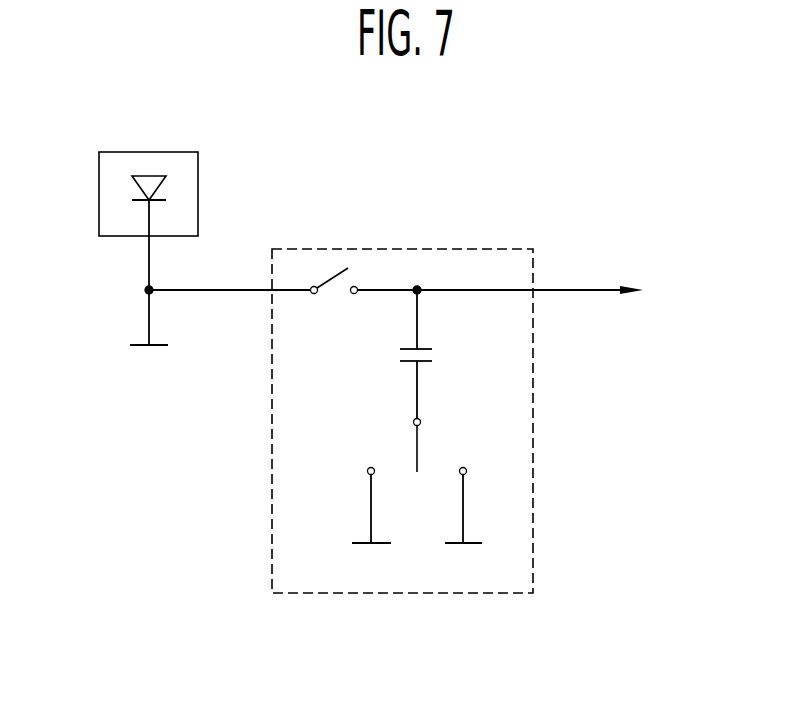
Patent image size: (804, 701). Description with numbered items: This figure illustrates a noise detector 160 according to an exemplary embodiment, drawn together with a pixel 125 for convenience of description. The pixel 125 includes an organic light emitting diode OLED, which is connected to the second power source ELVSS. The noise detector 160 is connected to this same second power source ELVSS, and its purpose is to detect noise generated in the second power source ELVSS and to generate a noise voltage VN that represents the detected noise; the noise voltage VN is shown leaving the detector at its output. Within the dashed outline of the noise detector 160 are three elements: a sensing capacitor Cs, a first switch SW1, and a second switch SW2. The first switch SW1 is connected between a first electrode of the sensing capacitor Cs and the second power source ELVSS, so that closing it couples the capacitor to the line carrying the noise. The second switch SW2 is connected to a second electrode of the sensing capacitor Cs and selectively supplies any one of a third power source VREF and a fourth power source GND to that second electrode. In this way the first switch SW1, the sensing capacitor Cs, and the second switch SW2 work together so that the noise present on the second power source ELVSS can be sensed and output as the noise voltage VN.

The pixel 125 is at (125, 165).
The noise detector 160 is at (406, 391).
The organic light emitting diode OLED is at (133, 184).
The first switch SW1 is at (334, 296).
The second switch SW2 is at (417, 463).
The sensing capacitor Cs is at (430, 356).
The second power source ELVSS is at (148, 362).
The noise voltage VN is at (516, 289).
The third power source VREF is at (371, 527).
The fourth power source GND is at (462, 527).